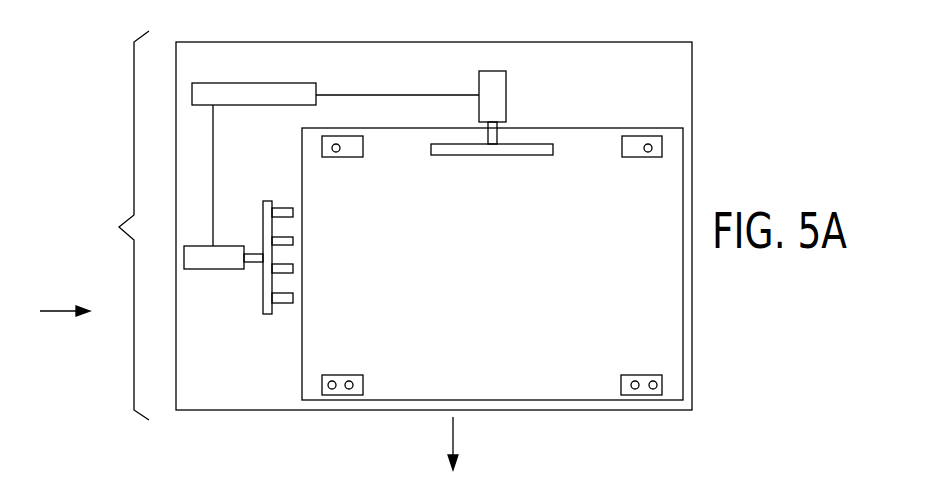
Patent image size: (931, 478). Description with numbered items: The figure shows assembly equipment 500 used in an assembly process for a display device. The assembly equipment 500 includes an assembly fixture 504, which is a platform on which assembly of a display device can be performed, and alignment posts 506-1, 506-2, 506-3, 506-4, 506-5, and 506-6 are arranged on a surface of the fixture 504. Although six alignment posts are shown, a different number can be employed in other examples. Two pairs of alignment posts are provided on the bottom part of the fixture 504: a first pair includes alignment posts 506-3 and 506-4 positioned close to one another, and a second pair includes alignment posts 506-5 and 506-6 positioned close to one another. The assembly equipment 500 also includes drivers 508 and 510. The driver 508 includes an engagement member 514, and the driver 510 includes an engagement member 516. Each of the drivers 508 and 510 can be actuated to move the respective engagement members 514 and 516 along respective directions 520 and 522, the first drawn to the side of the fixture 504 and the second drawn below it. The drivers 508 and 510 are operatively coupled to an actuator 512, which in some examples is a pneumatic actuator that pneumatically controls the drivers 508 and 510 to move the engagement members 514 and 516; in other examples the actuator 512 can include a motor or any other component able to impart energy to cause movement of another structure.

The assembly equipment 500 is at (111, 225).
The assembly fixture 504 is at (600, 42).
The alignment post 506-1 is at (336, 152).
The alignment post 506-2 is at (648, 152).
The alignment post 506-3 is at (332, 389).
The alignment post 506-4 is at (349, 381).
The alignment post 506-5 is at (635, 389).
The alignment post 506-6 is at (653, 389).
The driver 508 is at (214, 269).
The driver 510 is at (506, 90).
The actuator 512 is at (255, 83).
The engagement member 514 is at (279, 303).
The engagement member 516 is at (530, 150).
The direction 520 is at (64, 311).
The direction 522 is at (453, 438).